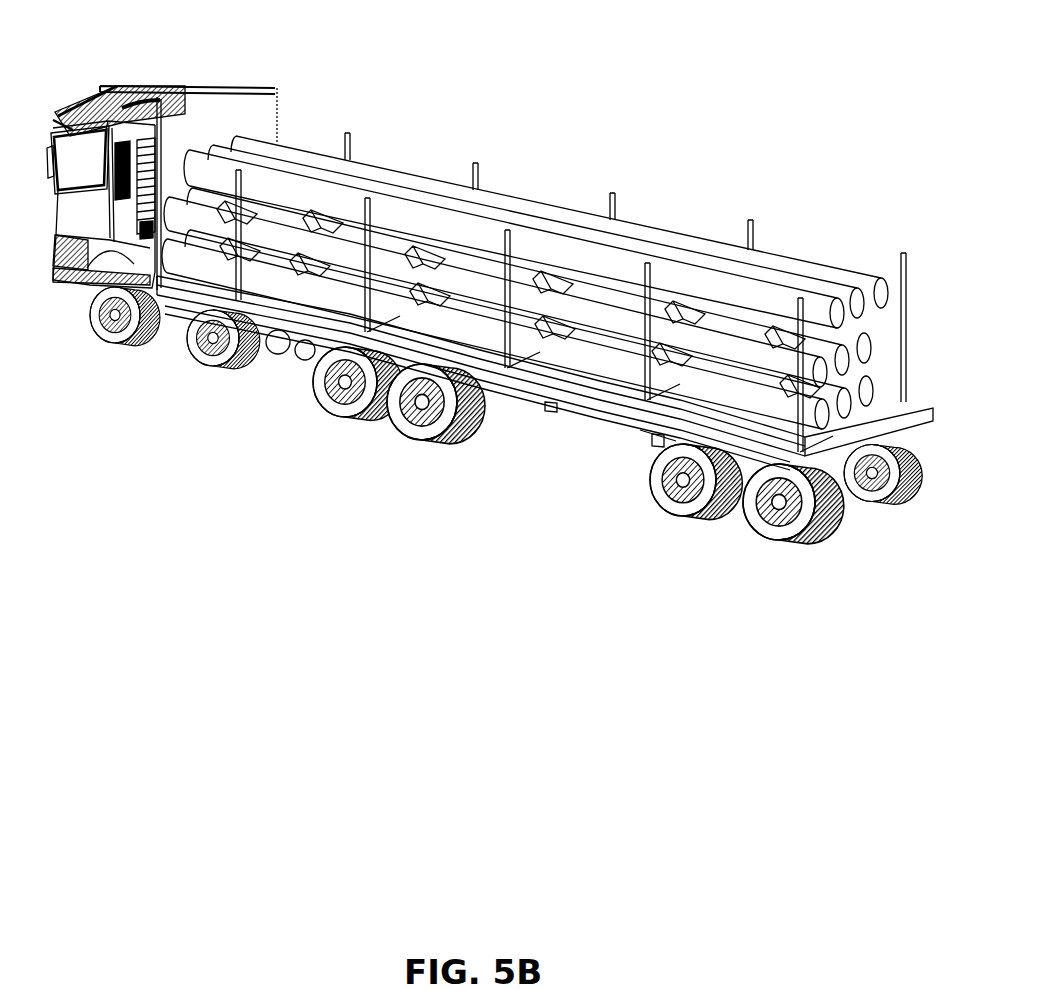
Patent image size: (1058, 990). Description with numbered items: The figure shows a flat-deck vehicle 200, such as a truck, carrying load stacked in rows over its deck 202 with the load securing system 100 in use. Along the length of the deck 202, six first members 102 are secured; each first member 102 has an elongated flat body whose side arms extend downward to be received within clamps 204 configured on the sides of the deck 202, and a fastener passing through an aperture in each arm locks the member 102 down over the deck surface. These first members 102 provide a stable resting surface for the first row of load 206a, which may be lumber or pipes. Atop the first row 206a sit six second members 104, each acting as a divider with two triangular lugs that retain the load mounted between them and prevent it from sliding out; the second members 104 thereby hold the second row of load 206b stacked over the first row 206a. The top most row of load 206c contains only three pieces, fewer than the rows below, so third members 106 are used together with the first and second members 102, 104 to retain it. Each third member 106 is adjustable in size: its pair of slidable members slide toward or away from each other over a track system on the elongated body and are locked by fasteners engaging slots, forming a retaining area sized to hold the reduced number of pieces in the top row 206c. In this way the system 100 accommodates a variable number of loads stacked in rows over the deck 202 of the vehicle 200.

The load securing system 100 is at (727, 110).
The first member 102 is at (655, 442).
The second member 104 is at (312, 276).
The third member 106 is at (688, 297).
The vehicle 200 is at (198, 100).
The deck 202 is at (913, 395).
The clamps 204 is at (558, 390).
The first row of load 206a is at (713, 397).
The second row of load 206b is at (485, 295).
The top most row of load 206c is at (602, 258).